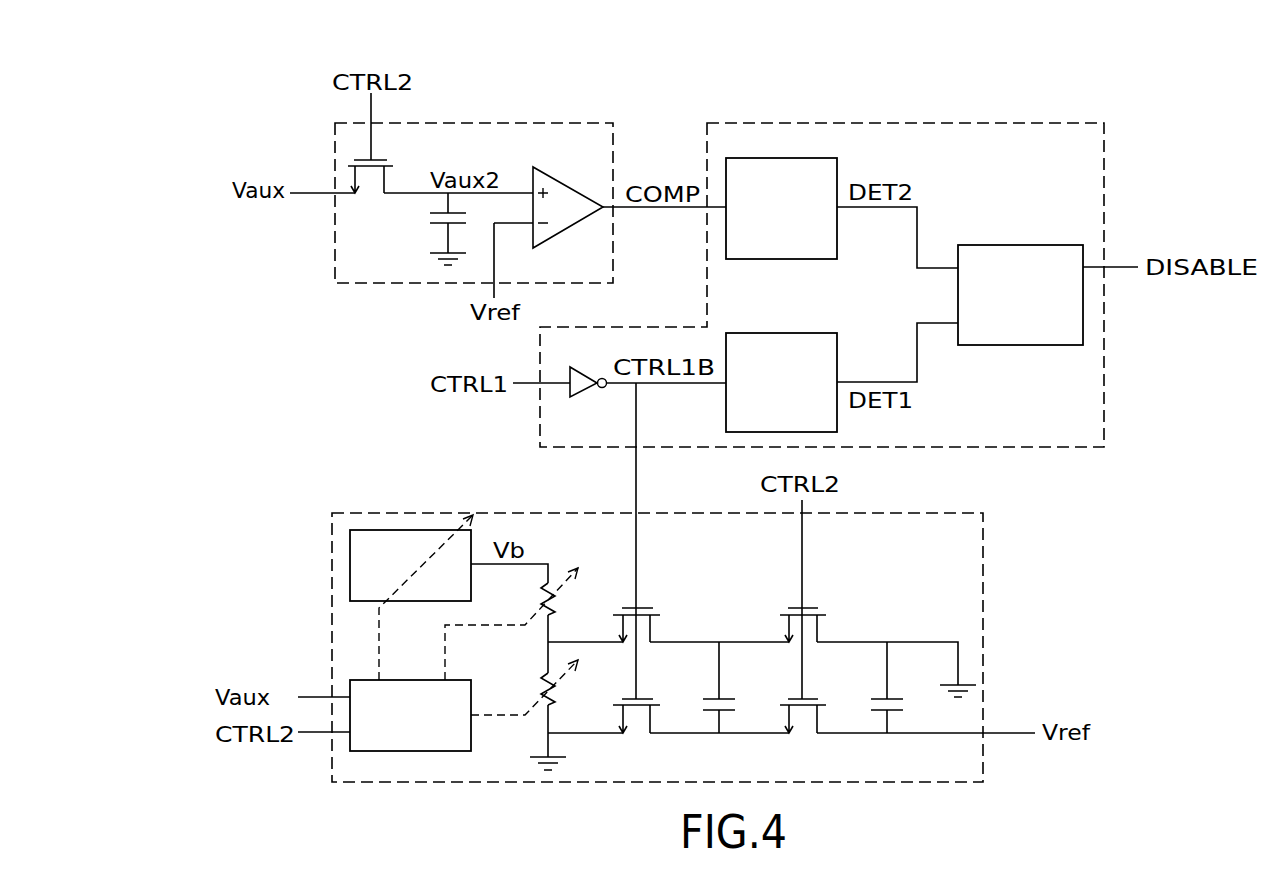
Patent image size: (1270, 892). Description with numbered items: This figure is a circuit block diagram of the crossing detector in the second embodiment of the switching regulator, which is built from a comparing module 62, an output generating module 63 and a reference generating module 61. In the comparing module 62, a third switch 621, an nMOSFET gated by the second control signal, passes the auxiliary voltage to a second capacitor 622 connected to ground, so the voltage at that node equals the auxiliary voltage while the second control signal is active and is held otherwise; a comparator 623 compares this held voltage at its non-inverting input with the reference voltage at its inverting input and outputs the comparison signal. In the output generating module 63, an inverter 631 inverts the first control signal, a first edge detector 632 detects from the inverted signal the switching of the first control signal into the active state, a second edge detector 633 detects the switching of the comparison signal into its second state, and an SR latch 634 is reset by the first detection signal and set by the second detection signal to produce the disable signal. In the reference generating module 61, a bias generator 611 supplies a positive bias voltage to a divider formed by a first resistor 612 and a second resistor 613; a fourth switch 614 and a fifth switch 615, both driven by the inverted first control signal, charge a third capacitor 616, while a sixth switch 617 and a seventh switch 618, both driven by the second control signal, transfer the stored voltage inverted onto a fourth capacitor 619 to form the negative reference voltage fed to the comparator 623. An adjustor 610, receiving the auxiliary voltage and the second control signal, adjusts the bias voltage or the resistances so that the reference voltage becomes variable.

The reference generating module 61 is at (983, 557).
The comparing module 62 is at (334, 142).
The output generating module 63 is at (1027, 122).
The adjustor 610 is at (407, 680).
The bias generator 611 is at (350, 565).
The first resistor 612 is at (553, 604).
The second resistor 613 is at (553, 693).
The fourth switch 614 is at (650, 628).
The fifth switch 615 is at (650, 719).
The third capacitor 616 is at (727, 699).
The sixth switch 617 is at (817, 628).
The seventh switch 618 is at (817, 719).
The fourth capacitor 619 is at (895, 699).
The third switch 621 is at (383, 186).
The second capacitor 622 is at (430, 226).
The comparator 623 is at (570, 228).
The inverter 631 is at (585, 392).
The first edge detector 632 is at (752, 332).
The second edge detector 633 is at (802, 259).
The SR latch 634 is at (1025, 245).